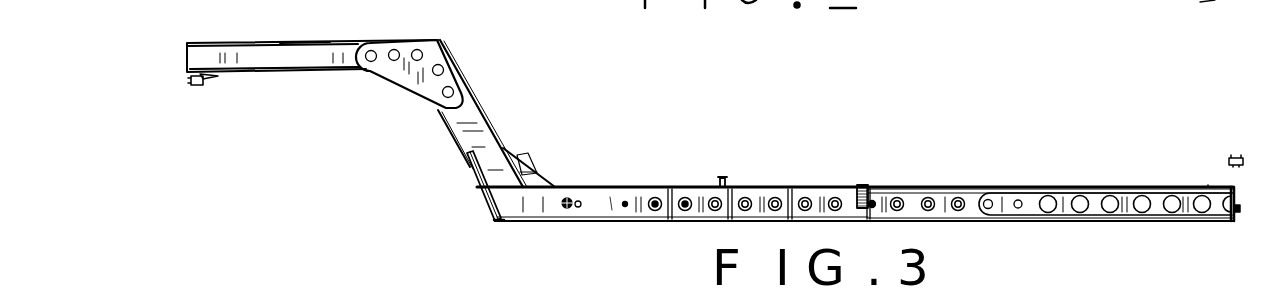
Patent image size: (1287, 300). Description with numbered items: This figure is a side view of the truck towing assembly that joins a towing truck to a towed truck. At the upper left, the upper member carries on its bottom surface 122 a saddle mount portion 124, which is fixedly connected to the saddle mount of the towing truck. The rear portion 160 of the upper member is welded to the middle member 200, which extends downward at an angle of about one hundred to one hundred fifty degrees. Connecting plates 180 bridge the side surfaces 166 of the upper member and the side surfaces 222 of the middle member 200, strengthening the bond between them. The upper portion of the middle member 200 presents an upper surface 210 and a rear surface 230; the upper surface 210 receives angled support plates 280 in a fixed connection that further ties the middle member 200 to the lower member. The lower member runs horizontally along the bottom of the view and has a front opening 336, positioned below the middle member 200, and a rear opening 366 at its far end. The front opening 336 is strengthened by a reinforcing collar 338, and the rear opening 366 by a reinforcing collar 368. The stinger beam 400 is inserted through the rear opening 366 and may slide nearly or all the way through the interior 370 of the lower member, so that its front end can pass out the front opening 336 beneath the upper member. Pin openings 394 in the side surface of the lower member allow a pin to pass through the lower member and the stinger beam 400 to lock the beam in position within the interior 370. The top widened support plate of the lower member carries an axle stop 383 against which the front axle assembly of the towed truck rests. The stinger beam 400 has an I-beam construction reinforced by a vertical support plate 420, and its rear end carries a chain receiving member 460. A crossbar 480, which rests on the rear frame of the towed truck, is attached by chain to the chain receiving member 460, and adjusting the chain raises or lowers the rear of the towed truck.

The bottom surface 122 is at (210, 78).
The saddle mount portion 124 is at (192, 86).
The rear portion 160 is at (295, 42).
The side surfaces 166 is at (257, 58).
The connecting plates 180 is at (431, 58).
The middle member 200 is at (473, 110).
The upper surface 210 is at (502, 145).
The side surfaces 222 is at (480, 146).
The rear surface 230 is at (442, 120).
The angled support plates 280 is at (533, 186).
The front opening 336 is at (477, 211).
The reinforcing collar 338 is at (497, 220).
The rear opening 366 is at (877, 184).
The reinforcing collar 368 is at (860, 185).
The interior 370 is at (610, 197).
The axle stop 383 is at (726, 178).
The pin openings 394 is at (625, 206).
The stinger beam 400 is at (1102, 203).
The vertical support plate 420 is at (972, 208).
The chain receiving member 460 is at (1240, 210).
The crossbar 480 is at (1245, 158).